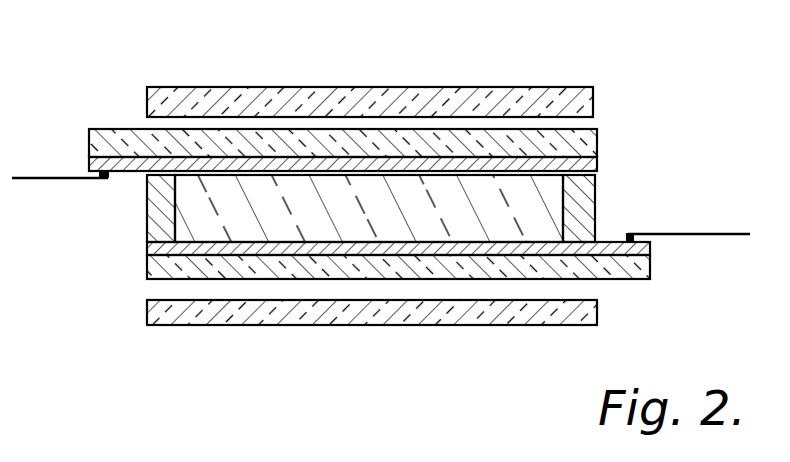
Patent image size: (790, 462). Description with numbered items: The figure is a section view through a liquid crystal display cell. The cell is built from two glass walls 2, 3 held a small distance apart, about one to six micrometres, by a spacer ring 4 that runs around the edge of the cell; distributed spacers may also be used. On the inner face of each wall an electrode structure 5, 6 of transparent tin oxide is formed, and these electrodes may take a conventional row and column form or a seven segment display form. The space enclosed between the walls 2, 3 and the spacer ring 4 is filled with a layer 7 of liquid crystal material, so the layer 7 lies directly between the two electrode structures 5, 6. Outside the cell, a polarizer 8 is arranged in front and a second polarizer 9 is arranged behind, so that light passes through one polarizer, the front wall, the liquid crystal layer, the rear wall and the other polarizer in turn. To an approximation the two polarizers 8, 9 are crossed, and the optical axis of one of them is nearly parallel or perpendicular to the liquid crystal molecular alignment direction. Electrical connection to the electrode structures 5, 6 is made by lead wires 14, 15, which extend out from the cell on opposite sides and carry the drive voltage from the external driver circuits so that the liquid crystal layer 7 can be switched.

The glass wall 2 is at (398, 135).
The glass wall 3 is at (458, 265).
The spacer ring 4 is at (597, 197).
The electrode structure 5 is at (255, 165).
The electrode structure 6 is at (545, 250).
The layer of liquid crystal material 7 is at (343, 220).
The polarizer 8 is at (511, 87).
The polarizer 9 is at (378, 315).
The lead wire 14 is at (70, 180).
The lead wire 15 is at (712, 236).